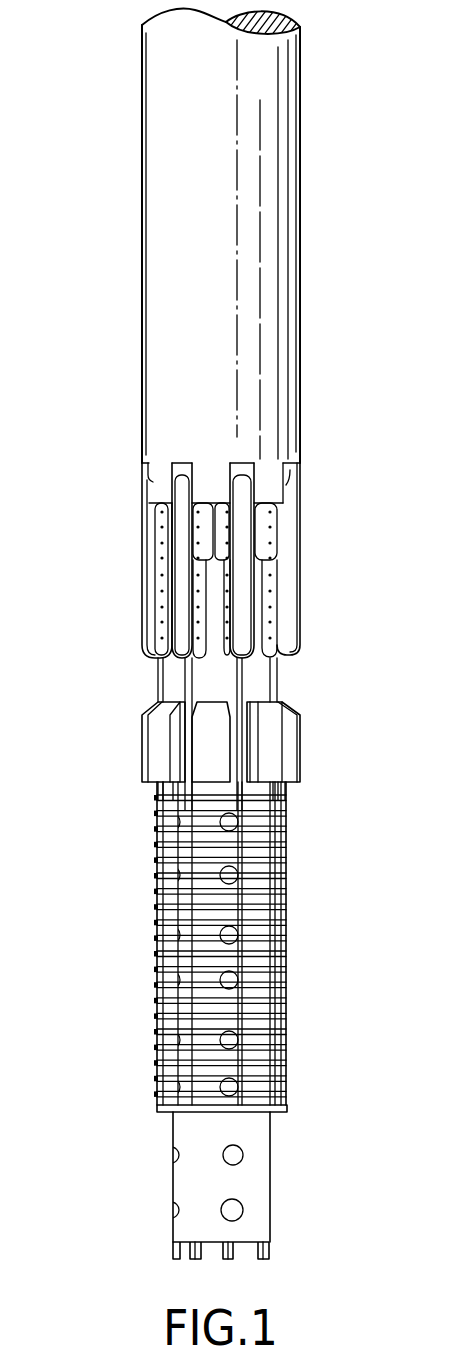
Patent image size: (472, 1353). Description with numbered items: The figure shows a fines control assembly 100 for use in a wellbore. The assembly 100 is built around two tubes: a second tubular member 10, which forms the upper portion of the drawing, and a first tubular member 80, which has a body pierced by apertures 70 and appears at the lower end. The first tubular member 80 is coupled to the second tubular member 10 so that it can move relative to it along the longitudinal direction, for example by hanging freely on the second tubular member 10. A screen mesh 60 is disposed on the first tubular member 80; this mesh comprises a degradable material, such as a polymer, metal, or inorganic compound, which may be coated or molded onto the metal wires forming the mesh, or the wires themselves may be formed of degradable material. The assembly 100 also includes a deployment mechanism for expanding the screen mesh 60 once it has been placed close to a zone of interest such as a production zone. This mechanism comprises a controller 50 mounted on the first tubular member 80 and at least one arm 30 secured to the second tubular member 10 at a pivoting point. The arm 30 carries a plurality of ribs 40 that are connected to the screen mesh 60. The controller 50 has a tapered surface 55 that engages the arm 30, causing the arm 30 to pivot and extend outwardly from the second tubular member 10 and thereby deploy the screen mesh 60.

The fines control assembly 100 is at (94, 236).
The second tubular member 10 is at (275, 222).
The arm 30 is at (240, 603).
The ribs 40 is at (270, 690).
The controller 50 is at (270, 766).
The tapered surface 55 is at (207, 708).
The screen mesh 60 is at (262, 922).
The apertures 70 is at (233, 1158).
The first tubular member 80 is at (252, 1192).